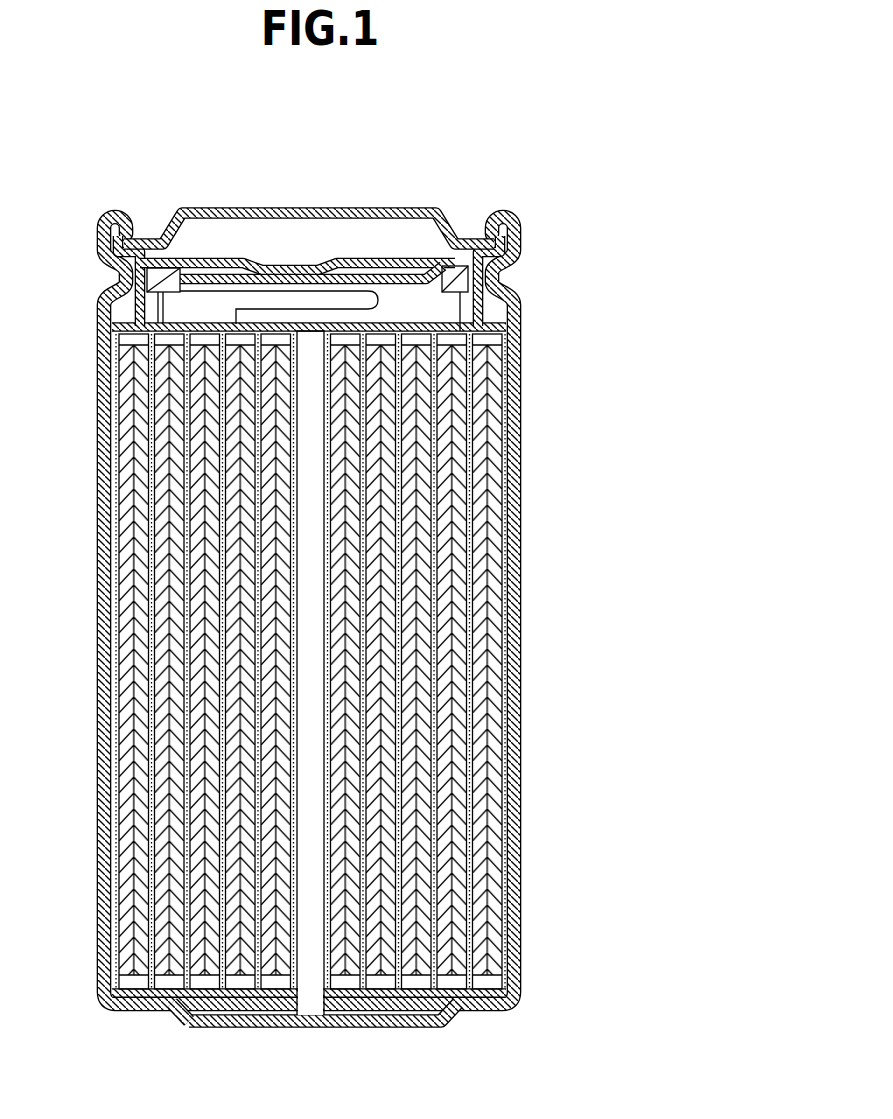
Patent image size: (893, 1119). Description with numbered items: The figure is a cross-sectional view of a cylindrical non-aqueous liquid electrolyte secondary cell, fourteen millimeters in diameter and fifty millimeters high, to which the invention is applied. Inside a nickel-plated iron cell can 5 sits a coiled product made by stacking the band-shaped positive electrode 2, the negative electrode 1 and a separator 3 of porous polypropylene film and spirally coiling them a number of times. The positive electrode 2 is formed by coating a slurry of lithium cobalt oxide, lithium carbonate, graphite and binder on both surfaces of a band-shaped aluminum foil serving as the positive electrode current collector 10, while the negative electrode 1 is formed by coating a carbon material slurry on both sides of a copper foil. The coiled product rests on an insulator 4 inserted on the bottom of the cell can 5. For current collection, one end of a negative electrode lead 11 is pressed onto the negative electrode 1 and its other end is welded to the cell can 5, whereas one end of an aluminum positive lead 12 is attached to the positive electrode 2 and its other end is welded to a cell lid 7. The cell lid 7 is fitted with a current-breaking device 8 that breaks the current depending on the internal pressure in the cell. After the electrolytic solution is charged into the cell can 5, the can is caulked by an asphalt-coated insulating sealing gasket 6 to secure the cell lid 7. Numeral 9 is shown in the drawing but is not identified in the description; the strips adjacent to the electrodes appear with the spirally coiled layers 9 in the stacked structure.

The negative electrode 1 is at (490, 387).
The positive electrode 2 is at (457, 500).
The separator 3 is at (483, 603).
The insulator 4 is at (473, 1017).
The cell can 5 is at (98, 462).
The insulating sealing gasket 6 is at (98, 257).
The cell lid 7 is at (325, 208).
The current-breaking device 8 is at (365, 262).
The negative electrode collector 9 is at (133, 573).
The positive electrode current collector 10 is at (163, 730).
The negative electrode lead 11 is at (180, 1017).
The positive lead 12 is at (412, 262).